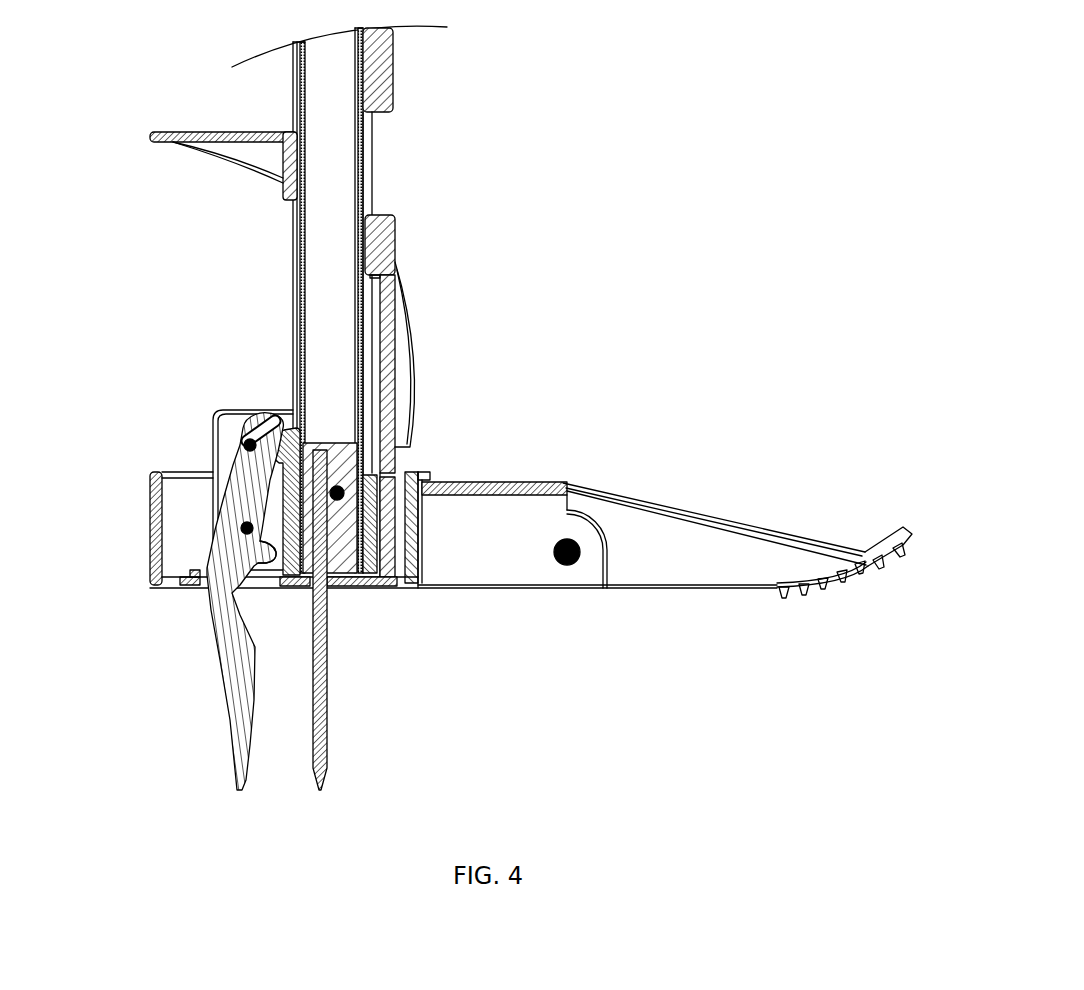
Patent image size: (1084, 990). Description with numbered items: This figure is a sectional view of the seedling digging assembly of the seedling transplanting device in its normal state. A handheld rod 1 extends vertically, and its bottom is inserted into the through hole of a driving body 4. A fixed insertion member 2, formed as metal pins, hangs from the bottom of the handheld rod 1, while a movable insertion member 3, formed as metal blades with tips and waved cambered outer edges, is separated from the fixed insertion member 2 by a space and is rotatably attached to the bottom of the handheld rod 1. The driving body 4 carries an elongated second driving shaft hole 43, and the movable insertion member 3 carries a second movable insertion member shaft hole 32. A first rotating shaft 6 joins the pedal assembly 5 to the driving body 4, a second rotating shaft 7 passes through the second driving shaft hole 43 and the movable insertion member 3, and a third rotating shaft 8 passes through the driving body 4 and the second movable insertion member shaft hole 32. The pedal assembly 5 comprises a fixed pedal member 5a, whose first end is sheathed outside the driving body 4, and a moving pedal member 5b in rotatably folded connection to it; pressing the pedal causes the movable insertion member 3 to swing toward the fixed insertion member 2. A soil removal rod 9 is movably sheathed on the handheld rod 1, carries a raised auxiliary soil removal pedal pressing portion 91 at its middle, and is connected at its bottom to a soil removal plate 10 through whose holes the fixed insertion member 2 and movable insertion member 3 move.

The handheld rod 1 is at (363, 152).
The fixed insertion member 2 is at (327, 722).
The movable insertion member 3 is at (232, 722).
The driving body 4 is at (222, 455).
The pedal assembly 5 is at (553, 425).
The fixed pedal member 5a is at (523, 481).
The moving pedal member 5b is at (655, 505).
The first rotating shaft 6 is at (365, 470).
The second rotating shaft 7 is at (245, 529).
The third rotating shaft 8 is at (247, 443).
The soil removal rod 9 is at (396, 240).
The soil removal plate 10 is at (353, 589).
The second movable insertion member shaft hole 32 is at (265, 428).
The second driving shaft hole 43 is at (258, 568).
The raised auxiliary soil removal pedal pressing portion 91 is at (205, 137).